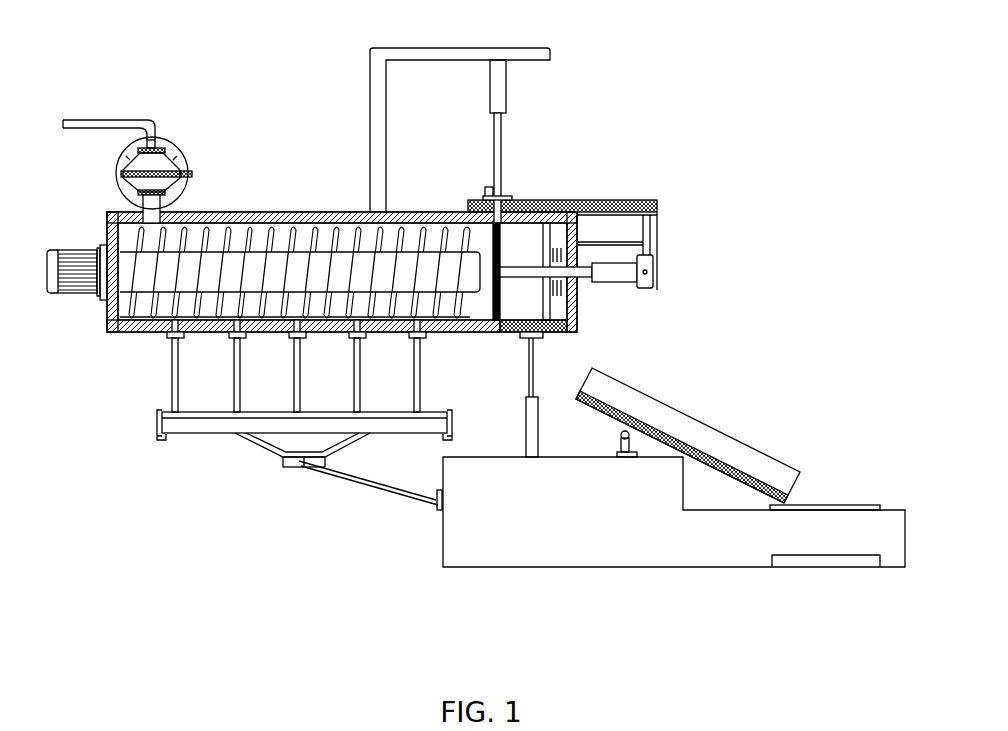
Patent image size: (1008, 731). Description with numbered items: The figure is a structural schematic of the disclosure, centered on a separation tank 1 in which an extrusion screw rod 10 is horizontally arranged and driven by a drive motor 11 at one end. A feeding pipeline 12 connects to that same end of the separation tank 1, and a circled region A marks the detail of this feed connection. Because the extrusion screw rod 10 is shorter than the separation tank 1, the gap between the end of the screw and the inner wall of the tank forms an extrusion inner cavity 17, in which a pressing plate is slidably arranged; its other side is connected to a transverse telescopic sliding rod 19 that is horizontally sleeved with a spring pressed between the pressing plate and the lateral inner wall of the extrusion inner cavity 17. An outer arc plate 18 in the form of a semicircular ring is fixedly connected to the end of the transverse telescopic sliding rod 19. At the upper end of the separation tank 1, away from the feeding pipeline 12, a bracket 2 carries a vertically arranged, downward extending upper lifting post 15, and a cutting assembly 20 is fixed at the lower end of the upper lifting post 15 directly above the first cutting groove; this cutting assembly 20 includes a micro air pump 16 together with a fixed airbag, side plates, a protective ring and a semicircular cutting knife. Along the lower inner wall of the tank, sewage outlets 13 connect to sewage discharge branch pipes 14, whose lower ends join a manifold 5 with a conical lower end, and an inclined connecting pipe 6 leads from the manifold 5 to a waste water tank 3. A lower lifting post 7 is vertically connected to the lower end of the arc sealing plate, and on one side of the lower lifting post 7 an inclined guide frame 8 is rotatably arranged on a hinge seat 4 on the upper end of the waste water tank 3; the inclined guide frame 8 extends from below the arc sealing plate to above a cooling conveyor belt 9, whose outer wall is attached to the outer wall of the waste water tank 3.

The separation tank 1 is at (107, 212).
The bracket 2 is at (382, 132).
The waste water tank 3 is at (572, 523).
The hinge seat 4 is at (632, 440).
The manifold 5 is at (285, 435).
The inclined connecting pipe 6 is at (373, 487).
The lower lifting post 7 is at (527, 425).
The inclined guide frame 8 is at (703, 445).
The cooling conveyor belt 9 is at (833, 555).
The extrusion screw rod 10 is at (193, 272).
The drive motor 11 is at (78, 262).
The feeding pipeline 12 is at (147, 148).
The sewage outlet 13 is at (170, 333).
The sewage discharge branch pipe 14 is at (238, 375).
The upper lifting post 15 is at (498, 95).
The micro air pump 16 is at (490, 185).
The extrusion inner cavity 17 is at (532, 237).
The outer arc plate 18 is at (617, 205).
The transverse telescopic sliding rod 19 is at (612, 272).
The cutting assembly 20 is at (502, 272).
The detail region A is at (132, 147).